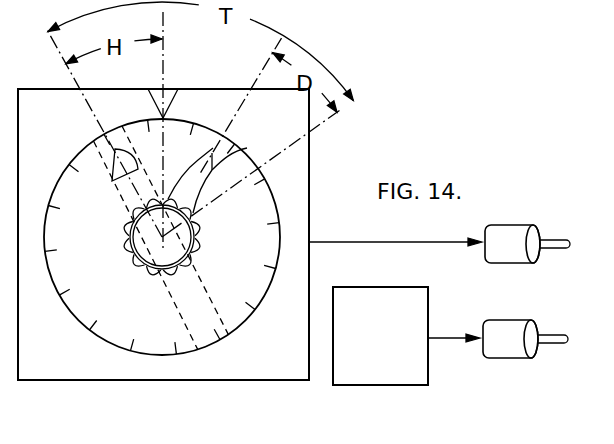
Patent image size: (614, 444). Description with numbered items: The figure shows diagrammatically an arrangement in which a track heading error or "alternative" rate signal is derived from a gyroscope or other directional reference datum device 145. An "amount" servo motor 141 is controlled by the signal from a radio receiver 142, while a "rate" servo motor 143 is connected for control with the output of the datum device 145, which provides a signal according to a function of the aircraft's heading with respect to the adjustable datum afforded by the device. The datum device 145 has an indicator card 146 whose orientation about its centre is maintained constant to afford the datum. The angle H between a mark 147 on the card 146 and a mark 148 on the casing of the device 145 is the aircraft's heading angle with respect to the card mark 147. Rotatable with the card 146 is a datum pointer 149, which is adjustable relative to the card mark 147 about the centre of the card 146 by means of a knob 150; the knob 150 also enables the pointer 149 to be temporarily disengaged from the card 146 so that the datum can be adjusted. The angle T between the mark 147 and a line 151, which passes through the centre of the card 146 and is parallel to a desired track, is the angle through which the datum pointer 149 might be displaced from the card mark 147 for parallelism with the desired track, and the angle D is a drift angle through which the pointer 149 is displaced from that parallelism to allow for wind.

The amount servo motor 141 is at (512, 330).
The radio receiver 142 is at (383, 297).
The rate servo motor 143 is at (512, 233).
The directional reference datum device 145 is at (65, 143).
The indicator card 146 is at (148, 323).
The card mark 147 is at (117, 178).
The casing mark 148 is at (169, 96).
The datum pointer 149 is at (251, 148).
The knob 150 is at (186, 236).
The line parallel to desired track 151 is at (325, 125).